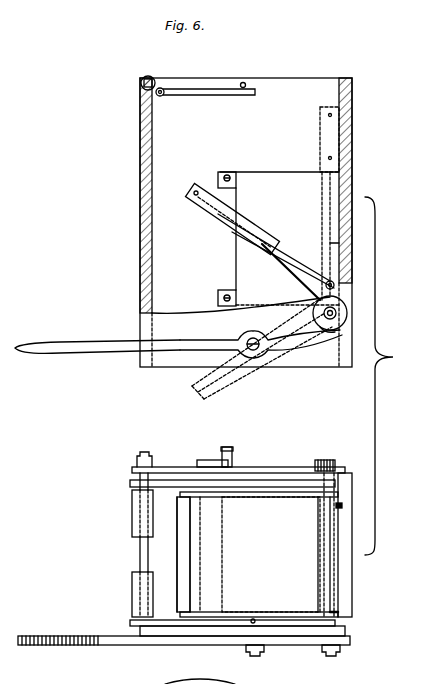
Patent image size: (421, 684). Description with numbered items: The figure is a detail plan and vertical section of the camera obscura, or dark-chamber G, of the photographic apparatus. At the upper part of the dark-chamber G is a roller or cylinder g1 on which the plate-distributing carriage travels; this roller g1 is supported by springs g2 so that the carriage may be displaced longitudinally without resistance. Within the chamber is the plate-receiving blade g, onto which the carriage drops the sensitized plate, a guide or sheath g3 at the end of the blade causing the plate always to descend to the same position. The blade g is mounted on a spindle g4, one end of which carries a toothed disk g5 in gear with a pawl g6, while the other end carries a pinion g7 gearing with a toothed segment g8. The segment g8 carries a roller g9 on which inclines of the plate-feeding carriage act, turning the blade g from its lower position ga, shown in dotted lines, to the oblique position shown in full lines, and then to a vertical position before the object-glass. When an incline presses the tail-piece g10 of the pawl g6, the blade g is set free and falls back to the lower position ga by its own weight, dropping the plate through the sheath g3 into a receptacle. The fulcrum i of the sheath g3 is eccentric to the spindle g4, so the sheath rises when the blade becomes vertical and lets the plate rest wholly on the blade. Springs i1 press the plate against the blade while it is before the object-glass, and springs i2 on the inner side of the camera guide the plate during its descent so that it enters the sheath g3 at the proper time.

The dark-chamber G is at (246, 325).
The plate-receiving blade g is at (243, 385).
The roller or cylinder g1 is at (141, 84).
The springs g2 is at (226, 95).
The guide or sheath g3 is at (185, 558).
The spindle g4 is at (347, 313).
The toothed disk g5 is at (338, 135).
The pawl g6 is at (335, 340).
The pinion g7 is at (336, 465).
The toothed segment g8 is at (238, 460).
The roller or cylinder g9 is at (233, 450).
The tail-piece of the pawl g10 is at (182, 499).
The lower position of the blade ga is at (250, 372).
The center of oscillation or fulcrum i is at (334, 286).
The springs i1 is at (339, 224).
The springs i2 is at (264, 404).